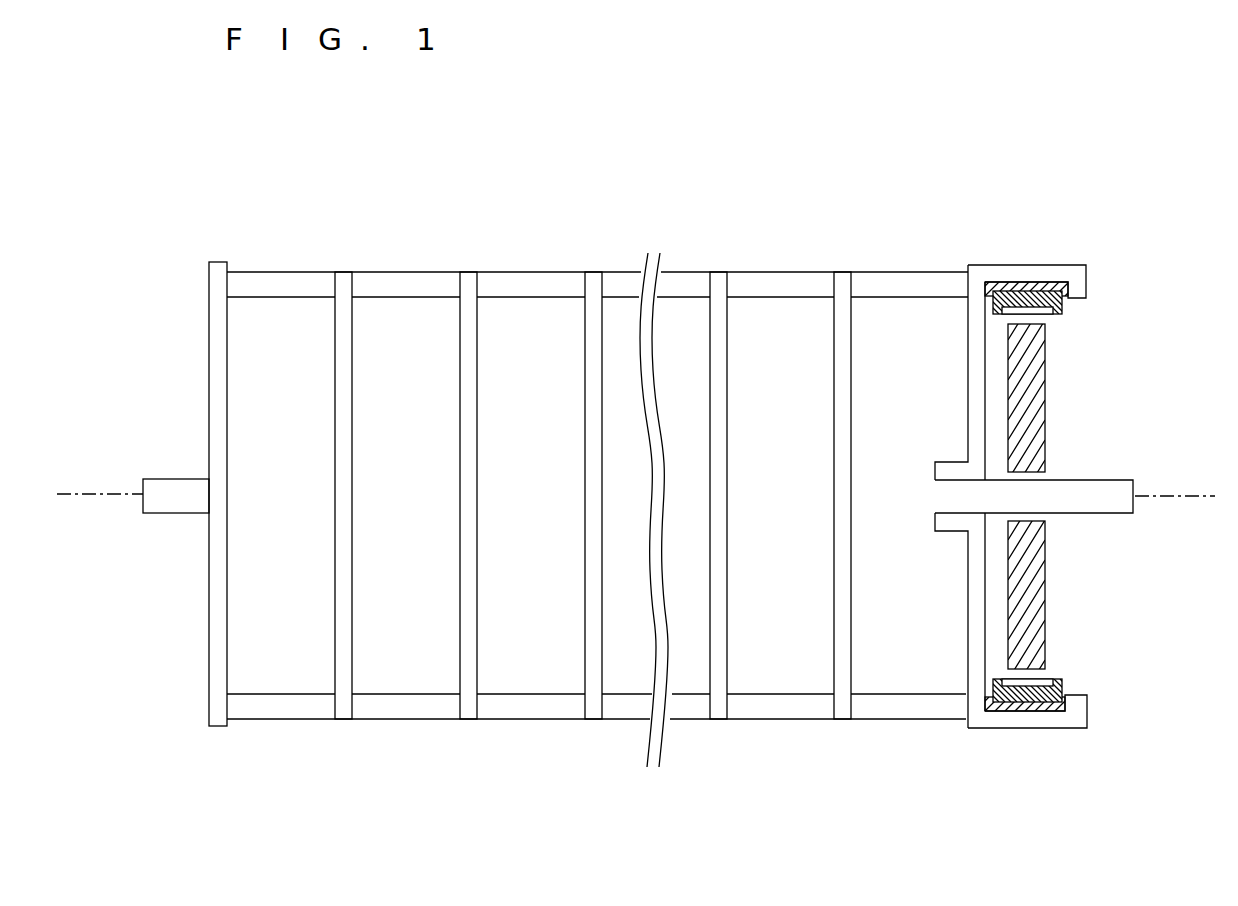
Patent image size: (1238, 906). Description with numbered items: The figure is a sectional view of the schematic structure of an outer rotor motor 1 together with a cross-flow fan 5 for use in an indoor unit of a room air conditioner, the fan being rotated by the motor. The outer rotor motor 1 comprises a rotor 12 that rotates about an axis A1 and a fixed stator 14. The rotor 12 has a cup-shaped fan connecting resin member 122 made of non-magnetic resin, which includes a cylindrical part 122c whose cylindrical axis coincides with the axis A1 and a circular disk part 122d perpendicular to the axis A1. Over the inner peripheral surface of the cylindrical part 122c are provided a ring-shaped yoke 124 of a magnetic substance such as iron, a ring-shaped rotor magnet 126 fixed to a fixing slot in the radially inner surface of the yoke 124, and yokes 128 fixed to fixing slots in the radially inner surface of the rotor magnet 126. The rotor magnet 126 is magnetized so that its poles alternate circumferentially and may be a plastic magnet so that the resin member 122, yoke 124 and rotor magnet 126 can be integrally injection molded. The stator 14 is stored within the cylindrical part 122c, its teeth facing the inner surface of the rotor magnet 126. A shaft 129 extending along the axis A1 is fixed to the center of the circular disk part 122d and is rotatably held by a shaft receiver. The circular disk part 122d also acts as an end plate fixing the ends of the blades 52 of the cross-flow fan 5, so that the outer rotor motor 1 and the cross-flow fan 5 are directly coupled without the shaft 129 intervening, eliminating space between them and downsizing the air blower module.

The outer rotor motor 1 is at (1020, 742).
The cross-flow fan 5 is at (517, 283).
The rotor 12 is at (1002, 437).
The stator 14 is at (1030, 399).
The blades 52 is at (767, 287).
The fan connecting resin member 122 is at (992, 437).
The cylindrical part 122c is at (1003, 276).
The circular disk part 122d is at (946, 463).
The yoke 124 is at (1068, 291).
The rotor magnet 126 is at (1062, 305).
The yokes 128 is at (1046, 312).
The shaft 129 is at (1118, 488).
The axis A1 is at (1195, 495).